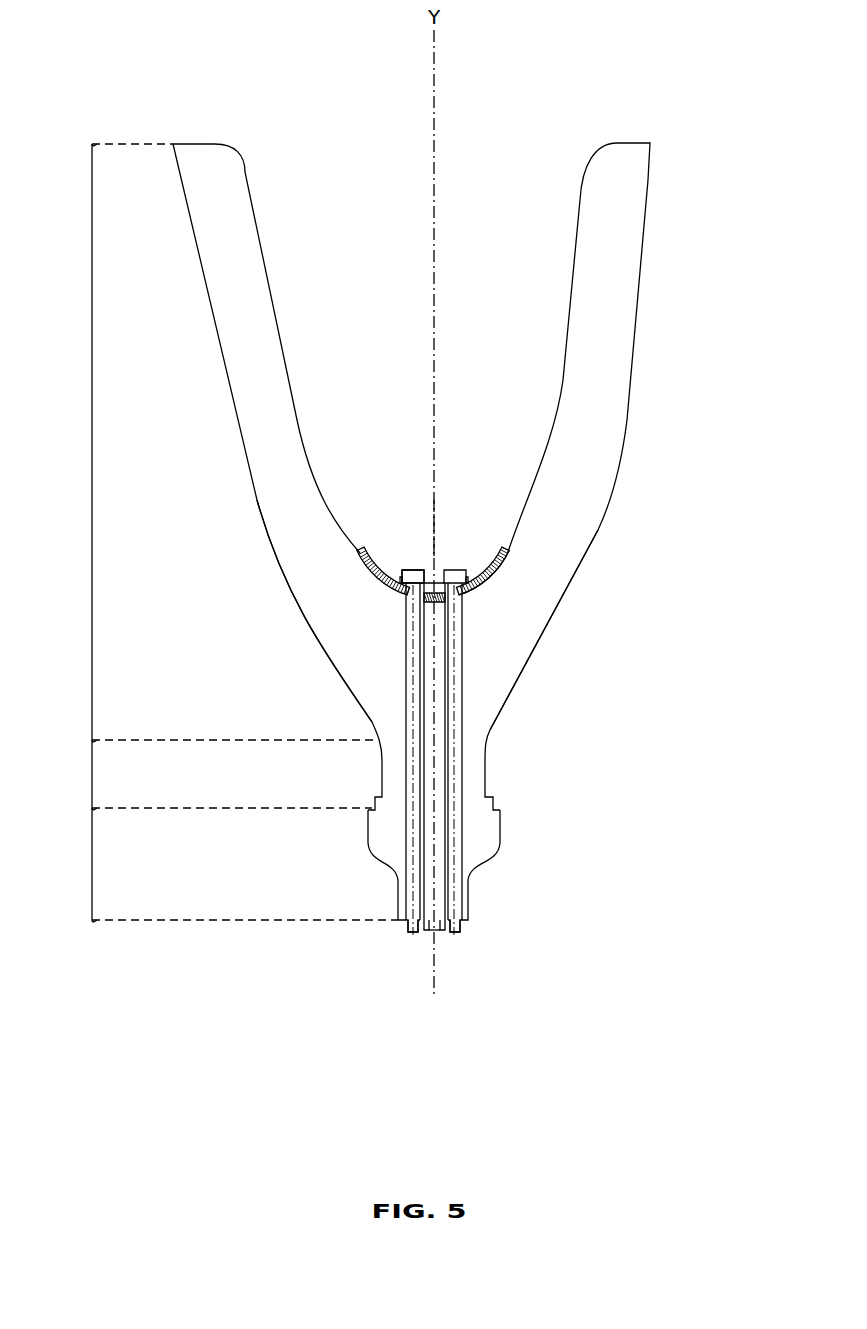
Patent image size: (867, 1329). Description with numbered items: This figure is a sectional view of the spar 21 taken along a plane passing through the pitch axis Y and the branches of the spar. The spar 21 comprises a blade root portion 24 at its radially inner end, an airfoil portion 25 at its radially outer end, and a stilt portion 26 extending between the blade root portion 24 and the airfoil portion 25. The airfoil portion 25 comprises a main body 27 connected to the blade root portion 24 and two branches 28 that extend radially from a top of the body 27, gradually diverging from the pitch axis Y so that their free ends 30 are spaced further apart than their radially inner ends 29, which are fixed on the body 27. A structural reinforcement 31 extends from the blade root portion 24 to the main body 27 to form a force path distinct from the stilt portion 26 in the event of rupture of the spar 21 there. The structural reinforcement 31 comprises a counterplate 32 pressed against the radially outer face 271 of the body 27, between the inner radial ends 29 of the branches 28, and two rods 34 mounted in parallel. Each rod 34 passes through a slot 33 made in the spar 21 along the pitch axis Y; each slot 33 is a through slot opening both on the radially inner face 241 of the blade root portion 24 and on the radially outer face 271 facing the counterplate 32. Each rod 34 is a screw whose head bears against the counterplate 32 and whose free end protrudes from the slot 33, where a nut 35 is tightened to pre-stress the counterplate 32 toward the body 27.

The spar 21 is at (530, 95).
The blade root portion 24 is at (92, 865).
The radially inner face 241 is at (434, 928).
The airfoil portion 25 is at (92, 443).
The stilt portion 26 is at (92, 775).
The main body 27 is at (433, 602).
The radially outer face 271 is at (490, 588).
The branches 28 is at (245, 362).
The radially inner end 29 is at (312, 552).
The free end 30 is at (203, 138).
The structural reinforcement 31 is at (436, 518).
The counterplate 32 is at (393, 570).
The slot 33 is at (422, 753).
The rod 34 is at (421, 573).
The nut 35 is at (412, 931).